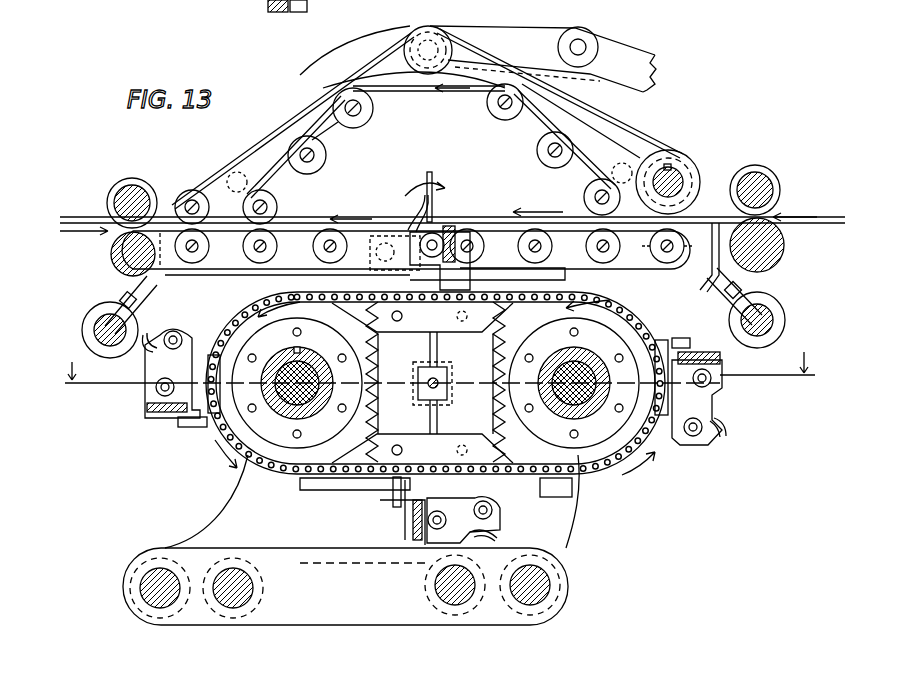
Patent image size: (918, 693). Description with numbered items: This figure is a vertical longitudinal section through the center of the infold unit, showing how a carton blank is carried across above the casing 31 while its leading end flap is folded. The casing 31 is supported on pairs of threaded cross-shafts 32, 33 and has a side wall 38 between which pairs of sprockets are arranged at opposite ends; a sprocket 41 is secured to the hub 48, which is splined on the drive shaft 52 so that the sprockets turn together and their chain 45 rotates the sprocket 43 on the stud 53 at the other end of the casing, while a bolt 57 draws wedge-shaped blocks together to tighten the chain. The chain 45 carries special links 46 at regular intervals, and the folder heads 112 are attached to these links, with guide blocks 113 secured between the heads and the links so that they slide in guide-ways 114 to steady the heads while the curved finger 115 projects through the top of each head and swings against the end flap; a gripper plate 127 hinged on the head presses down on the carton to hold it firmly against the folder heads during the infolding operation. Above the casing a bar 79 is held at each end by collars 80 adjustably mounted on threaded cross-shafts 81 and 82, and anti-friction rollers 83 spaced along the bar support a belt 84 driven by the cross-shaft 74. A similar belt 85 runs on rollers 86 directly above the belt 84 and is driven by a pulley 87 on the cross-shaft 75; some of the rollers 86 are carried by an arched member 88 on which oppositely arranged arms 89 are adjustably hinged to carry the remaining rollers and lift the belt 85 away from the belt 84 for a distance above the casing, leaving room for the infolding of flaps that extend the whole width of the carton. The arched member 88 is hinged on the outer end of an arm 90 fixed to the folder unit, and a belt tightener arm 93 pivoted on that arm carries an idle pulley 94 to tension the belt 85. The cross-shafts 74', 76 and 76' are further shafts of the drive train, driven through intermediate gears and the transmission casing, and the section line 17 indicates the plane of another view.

The section line 17 is at (436, 379).
The casing 31 is at (215, 530).
The threaded cross-shaft 32 is at (160, 607).
The threaded cross-shaft 33 is at (233, 607).
The side wall 38 is at (424, 383).
The sprocket 41 is at (380, 414).
The sprocket 43 is at (494, 406).
The chain 45 is at (333, 474).
The special link 46 is at (420, 296).
The hub 48 is at (300, 384).
The drive shaft 52 is at (303, 400).
The stud 53 is at (580, 400).
The bolt 57 is at (448, 389).
The cross-shaft 74 is at (110, 259).
The cross-shaft 74' is at (110, 203).
The cross-shaft 75 is at (682, 170).
The cross-shaft 76 is at (772, 189).
The cross-shaft 76' is at (776, 245).
The bar 79 is at (692, 260).
The collar 80 is at (88, 314).
The cross-shaft 81 is at (773, 323).
The cross-shaft 82 is at (96, 340).
The anti-friction roller 83 is at (612, 262).
The belt 84 is at (220, 276).
The belt 85 is at (634, 121).
The roller 86 is at (305, 146).
The pulley 87 is at (676, 158).
The arched member 88 is at (322, 74).
The arm 89 is at (345, 130).
The arm 90 is at (650, 52).
The belt tightener arm 93 is at (496, 38).
The idle pulley 94 is at (432, 37).
The folder head 112 is at (452, 226).
The guide block 113 is at (415, 492).
The guide-way 114 is at (574, 500).
The curved finger 115 is at (410, 206).
The gripper plate 127 is at (440, 202).